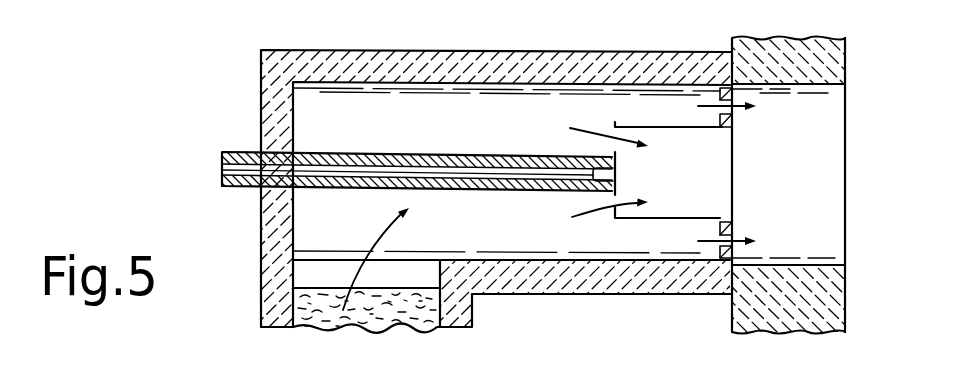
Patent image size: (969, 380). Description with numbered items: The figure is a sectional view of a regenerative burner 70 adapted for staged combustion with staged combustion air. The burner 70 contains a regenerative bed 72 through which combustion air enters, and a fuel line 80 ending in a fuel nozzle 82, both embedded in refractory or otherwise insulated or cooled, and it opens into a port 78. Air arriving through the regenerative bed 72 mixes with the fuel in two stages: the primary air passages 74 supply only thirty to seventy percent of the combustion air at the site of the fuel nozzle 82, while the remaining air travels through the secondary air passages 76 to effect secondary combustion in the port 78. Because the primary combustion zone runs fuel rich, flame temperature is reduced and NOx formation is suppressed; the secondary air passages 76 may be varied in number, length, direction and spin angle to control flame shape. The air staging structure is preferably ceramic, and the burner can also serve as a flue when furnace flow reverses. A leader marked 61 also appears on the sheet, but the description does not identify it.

The connecting line 61 is at (112, 0).
The burner 70 is at (356, 50).
The regenerative bed 72 is at (314, 315).
The primary air passages 74 is at (612, 137).
The secondary air passages 76 is at (733, 114).
The port 78 is at (823, 151).
The fuel line 80 is at (254, 186).
The fuel nozzle 82 is at (598, 188).